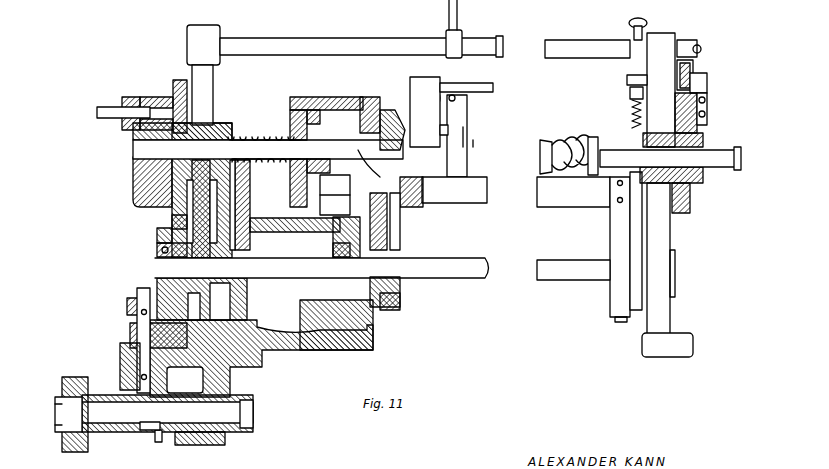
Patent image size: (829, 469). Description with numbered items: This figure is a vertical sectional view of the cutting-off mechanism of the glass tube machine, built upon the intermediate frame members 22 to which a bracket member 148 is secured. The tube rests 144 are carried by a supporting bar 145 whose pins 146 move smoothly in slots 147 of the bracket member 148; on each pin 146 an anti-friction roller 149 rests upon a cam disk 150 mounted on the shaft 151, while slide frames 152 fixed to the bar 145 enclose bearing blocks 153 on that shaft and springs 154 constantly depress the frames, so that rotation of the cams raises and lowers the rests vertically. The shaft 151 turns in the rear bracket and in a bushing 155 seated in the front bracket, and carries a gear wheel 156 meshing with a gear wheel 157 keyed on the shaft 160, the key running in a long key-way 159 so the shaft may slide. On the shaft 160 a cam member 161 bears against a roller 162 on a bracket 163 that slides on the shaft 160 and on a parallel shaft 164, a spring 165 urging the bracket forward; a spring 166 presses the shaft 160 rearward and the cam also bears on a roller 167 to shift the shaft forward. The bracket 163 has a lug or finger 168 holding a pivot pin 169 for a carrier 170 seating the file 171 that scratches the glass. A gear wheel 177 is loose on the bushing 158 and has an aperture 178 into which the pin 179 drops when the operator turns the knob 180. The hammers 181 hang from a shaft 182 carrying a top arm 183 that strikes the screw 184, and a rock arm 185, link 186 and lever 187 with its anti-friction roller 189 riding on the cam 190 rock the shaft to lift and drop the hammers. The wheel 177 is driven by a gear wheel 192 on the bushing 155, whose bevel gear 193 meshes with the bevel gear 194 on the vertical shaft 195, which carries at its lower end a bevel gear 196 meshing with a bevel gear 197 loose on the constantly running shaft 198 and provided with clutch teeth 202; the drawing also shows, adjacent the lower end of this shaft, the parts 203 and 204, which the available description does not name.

The intermediate frame members 22 is at (263, 362).
The tube rests 144 is at (462, 115).
The supporting bar 145 is at (454, 190).
The pins 146 is at (408, 205).
The slots 147 is at (329, 237).
The bracket member 148 is at (213, 75).
The anti-friction roller 149 is at (378, 165).
The cam disk 150 is at (398, 228).
The shaft 151 is at (455, 257).
The slide frames 152 is at (402, 305).
The bearing blocks 153 is at (390, 250).
The springs 154 is at (402, 286).
The bushing 155 is at (157, 248).
The gear wheel 156 is at (240, 230).
The gear wheel 157 is at (225, 200).
The bushing 158 is at (133, 170).
The key-way 159 is at (272, 134).
The shaft 160 is at (133, 150).
The cam member 161 is at (352, 97).
The roller 162 is at (380, 103).
The bracket 163 is at (360, 113).
The parallel shaft 164 is at (487, 147).
The spring 165 is at (560, 142).
The spring 166 is at (236, 134).
The roller 167 is at (334, 195).
The lug or finger 168 is at (410, 128).
The pivot pin 169 is at (418, 92).
The carrier 170 is at (432, 82).
The file 171 is at (494, 87).
The gear wheel 177 is at (178, 92).
The aperture 178 is at (193, 118).
The pin 179 is at (97, 112).
The knob 180 is at (135, 97).
The hammers 181 is at (460, 18).
The shaft 182 is at (361, 44).
The top arm 183 is at (647, 25).
The screw 184 is at (627, 80).
The rock arm 185 is at (690, 42).
The link 186 is at (692, 72).
The lever 187 is at (707, 81).
The anti-friction roller 189 is at (676, 94).
The cam 190 is at (690, 197).
The gear wheel 192 is at (172, 221).
The bevel gear 193 is at (160, 234).
The bevel gear 194 is at (127, 306).
The vertical shaft 195 is at (137, 310).
The bevel gear 196 is at (120, 370).
The bevel gear 197 is at (195, 445).
The constantly running shaft 198 is at (242, 412).
The clutch teeth 202 is at (160, 442).
The plate 203 is at (150, 432).
The flange 204 is at (62, 442).